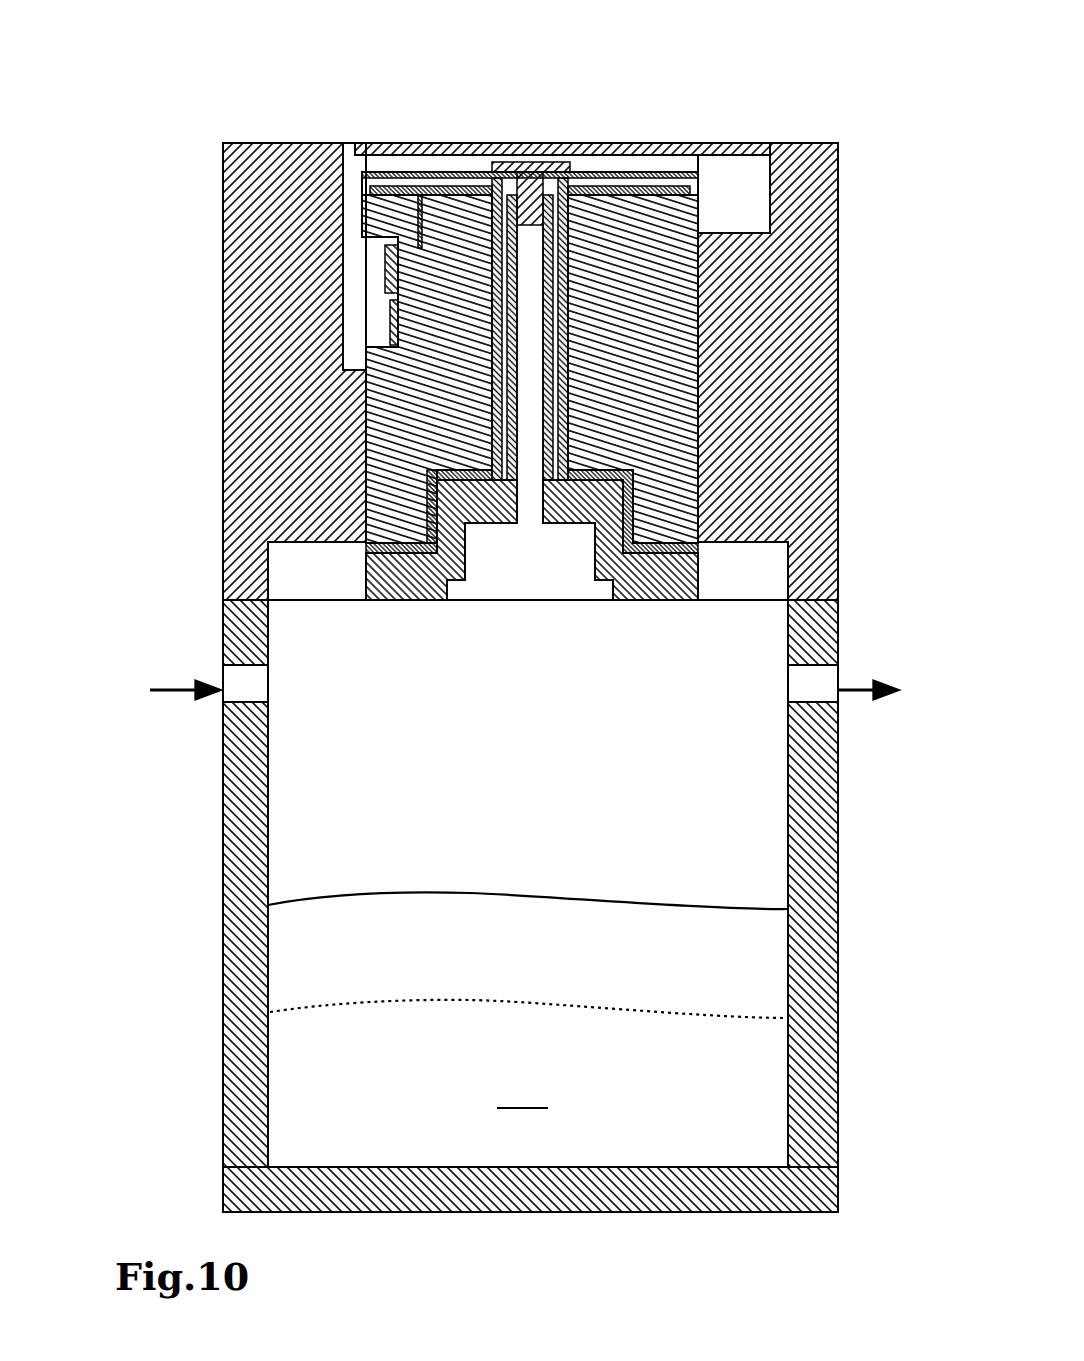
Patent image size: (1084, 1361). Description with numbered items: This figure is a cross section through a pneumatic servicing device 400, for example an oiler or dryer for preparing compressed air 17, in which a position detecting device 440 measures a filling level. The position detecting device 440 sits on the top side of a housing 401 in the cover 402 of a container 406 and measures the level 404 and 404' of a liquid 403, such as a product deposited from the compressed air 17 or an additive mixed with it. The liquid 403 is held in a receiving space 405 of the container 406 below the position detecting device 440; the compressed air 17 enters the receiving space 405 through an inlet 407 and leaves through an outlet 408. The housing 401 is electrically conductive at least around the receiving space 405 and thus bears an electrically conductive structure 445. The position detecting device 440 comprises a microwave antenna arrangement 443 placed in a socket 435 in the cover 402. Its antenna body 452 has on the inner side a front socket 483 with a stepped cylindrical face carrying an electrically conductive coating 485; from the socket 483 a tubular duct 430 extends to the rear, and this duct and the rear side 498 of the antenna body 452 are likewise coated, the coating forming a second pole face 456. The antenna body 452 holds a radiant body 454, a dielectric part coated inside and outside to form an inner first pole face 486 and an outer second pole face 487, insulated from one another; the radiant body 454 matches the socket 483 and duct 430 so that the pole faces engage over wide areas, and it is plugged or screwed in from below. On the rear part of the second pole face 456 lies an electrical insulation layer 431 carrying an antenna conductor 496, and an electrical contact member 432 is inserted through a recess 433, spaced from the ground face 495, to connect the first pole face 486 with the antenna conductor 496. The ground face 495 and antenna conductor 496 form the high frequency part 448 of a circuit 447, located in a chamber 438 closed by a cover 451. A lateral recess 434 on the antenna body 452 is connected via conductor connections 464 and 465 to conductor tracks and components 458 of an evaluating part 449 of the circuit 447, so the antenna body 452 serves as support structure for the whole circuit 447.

The pneumatic servicing device 400 is at (590, 619).
The housing 401 is at (162, 198).
The cover 402 is at (248, 410).
The liquid 403 is at (522, 1097).
The level of filling 404 is at (528, 864).
The level of filling 404' is at (529, 975).
The receiving space 405 is at (300, 870).
The container 406 is at (222, 630).
The inlet 407 is at (245, 682).
The outlet 408 is at (815, 685).
The compressed air 17 is at (172, 692).
The tubular duct 430 is at (575, 365).
The electrical insulation layer 431 is at (407, 152).
The electrical contact member 432 is at (522, 162).
The recess 433 is at (566, 172).
The recess 434 is at (368, 345).
The socket 435 is at (713, 288).
The chamber 438 is at (800, 185).
The position detecting device 440 is at (722, 326).
The microwave antenna arrangement 443 is at (722, 377).
The electrically conductive structure 445 is at (747, 905).
The circuit 447 is at (340, 190).
The high frequency part 448 is at (640, 150).
The evaluating part 449 is at (365, 280).
The cover 451 is at (735, 150).
The antenna body 452 is at (740, 447).
The radiant body 454 is at (683, 598).
The second pole face 456 is at (573, 297).
The components 458 is at (407, 283).
The conductor connection 464 is at (363, 228).
The conductor connection 465 is at (423, 225).
The front socket 483 is at (623, 467).
The electrically conductive coating 485 is at (580, 430).
The first pole face 486 is at (495, 527).
The second pole face 487 is at (593, 487).
The ground face 495 is at (612, 195).
The antenna conductor 496 is at (456, 172).
The rear side 498 is at (698, 185).